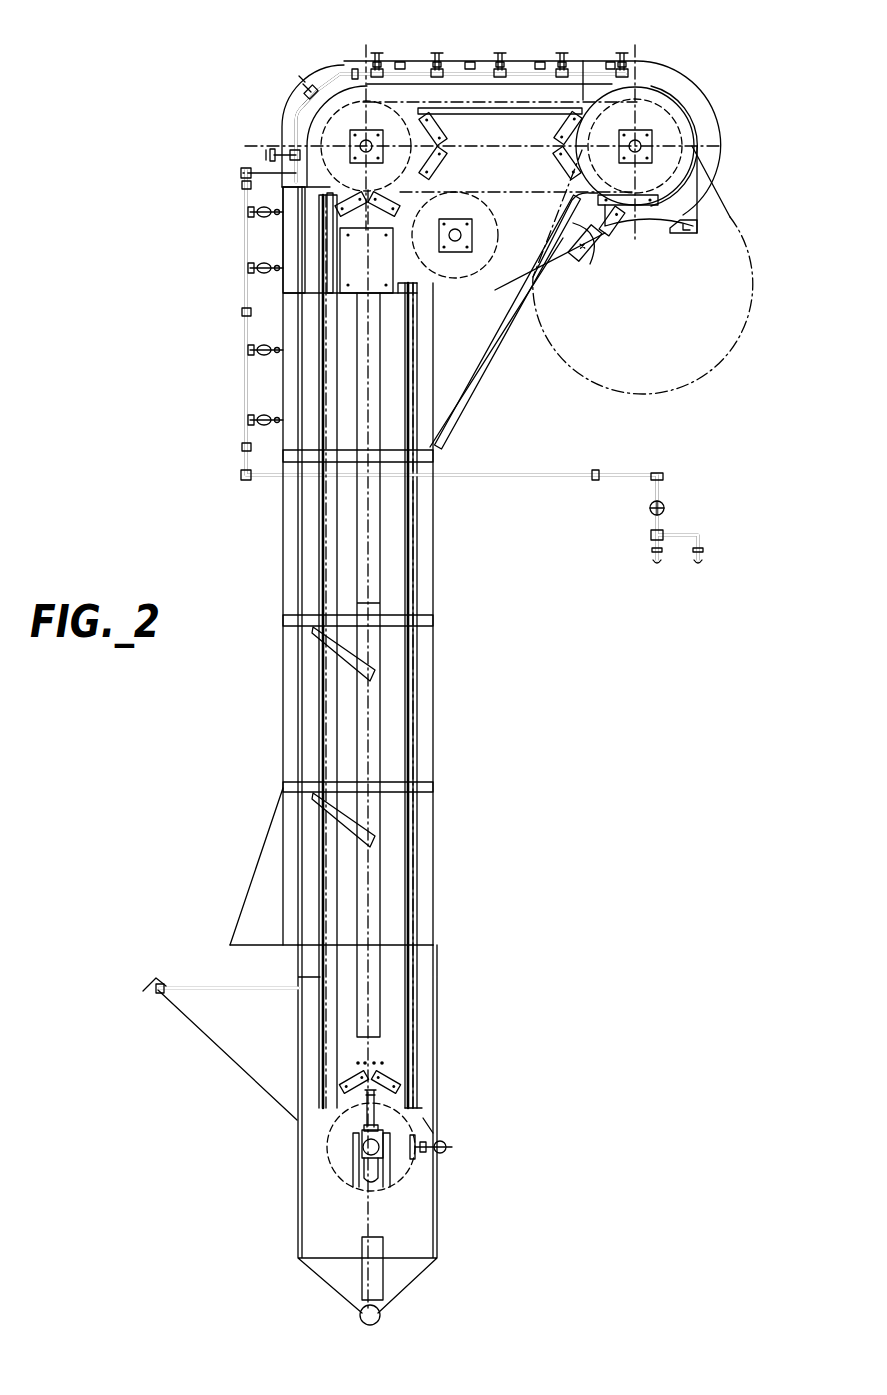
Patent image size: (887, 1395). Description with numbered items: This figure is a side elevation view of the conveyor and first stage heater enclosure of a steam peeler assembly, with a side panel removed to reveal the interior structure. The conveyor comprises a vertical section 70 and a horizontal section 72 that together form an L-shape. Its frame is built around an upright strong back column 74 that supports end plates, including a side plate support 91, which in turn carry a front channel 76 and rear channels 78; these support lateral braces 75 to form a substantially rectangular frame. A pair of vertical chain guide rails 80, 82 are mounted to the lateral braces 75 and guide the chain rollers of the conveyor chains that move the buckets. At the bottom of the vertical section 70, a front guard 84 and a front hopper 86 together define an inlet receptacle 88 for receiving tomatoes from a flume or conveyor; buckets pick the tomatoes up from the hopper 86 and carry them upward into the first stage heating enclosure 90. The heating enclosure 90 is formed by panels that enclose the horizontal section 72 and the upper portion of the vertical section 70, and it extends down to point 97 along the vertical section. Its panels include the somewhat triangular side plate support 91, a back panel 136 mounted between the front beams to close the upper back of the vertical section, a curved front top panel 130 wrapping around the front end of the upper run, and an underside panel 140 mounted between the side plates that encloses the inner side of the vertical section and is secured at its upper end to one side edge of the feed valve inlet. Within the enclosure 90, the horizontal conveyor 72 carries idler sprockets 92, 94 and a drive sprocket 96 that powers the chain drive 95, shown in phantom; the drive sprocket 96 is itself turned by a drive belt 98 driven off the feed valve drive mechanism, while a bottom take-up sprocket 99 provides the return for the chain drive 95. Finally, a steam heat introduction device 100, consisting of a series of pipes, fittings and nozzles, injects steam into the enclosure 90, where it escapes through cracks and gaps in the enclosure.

The vertical section 70 is at (280, 713).
The horizontal section 72 is at (418, 50).
The strong back column 74 is at (383, 722).
The lateral braces 75 is at (389, 452).
The front channel 76 is at (298, 580).
The rear channels 78 is at (434, 497).
The vertical chain guide rail 80 is at (310, 773).
The vertical chain guide rail 82 is at (413, 873).
The front guard 84 is at (253, 863).
The front hopper 86 is at (227, 1050).
The inlet receptacle 88 is at (206, 958).
The first stage heating enclosure 90 is at (282, 105).
The side plate support 91 is at (455, 393).
The idler sprocket 92 is at (423, 270).
The idler sprocket 94 is at (340, 107).
The chain drive 95 is at (583, 100).
The drive sprocket 96 is at (660, 110).
The point 97 is at (280, 460).
The drive belt 98 is at (735, 220).
The bottom take-up sprocket 99 is at (418, 1160).
The steam heat introduction device 100 is at (498, 50).
The curved front top panel 130 is at (660, 62).
The back panel 136 is at (283, 242).
The underside panel 140 is at (505, 340).